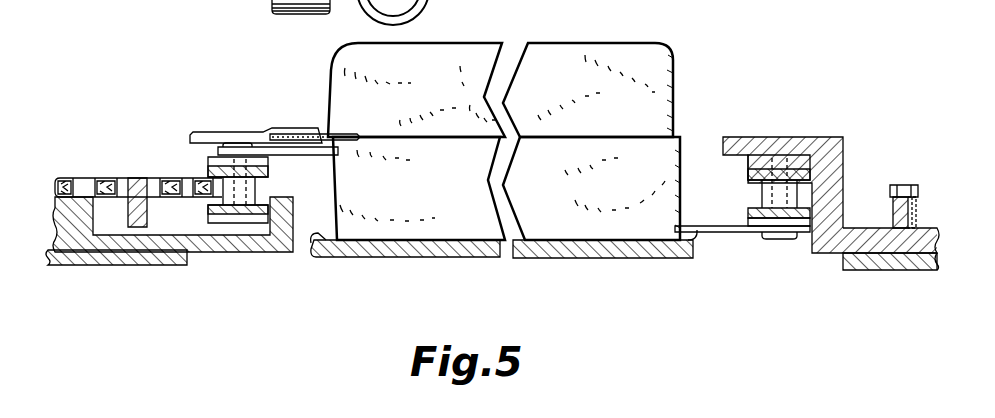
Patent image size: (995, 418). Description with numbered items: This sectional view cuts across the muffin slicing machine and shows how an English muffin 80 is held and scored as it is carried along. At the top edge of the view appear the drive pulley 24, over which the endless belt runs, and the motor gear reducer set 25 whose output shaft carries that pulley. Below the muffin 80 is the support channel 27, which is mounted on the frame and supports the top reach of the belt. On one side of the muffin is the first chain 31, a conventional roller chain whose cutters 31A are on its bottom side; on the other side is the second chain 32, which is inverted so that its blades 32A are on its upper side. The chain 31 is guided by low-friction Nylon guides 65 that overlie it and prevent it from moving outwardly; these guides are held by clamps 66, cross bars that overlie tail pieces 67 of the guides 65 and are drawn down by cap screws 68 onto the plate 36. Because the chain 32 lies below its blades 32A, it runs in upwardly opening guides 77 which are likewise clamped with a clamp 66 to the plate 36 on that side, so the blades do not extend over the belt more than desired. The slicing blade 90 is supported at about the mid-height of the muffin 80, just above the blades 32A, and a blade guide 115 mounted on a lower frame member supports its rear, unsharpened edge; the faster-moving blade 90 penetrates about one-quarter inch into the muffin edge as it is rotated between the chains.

The drive pulley 24 is at (276, 7).
The motor gear reducer set 25 is at (418, 3).
The support channel 27 is at (695, 258).
The first chain 31 is at (783, 216).
The cutters 31A is at (697, 226).
The second chain 32 is at (208, 170).
The blades 32A is at (318, 158).
The plate 36 is at (112, 265).
The guides 65 is at (788, 137).
The clamps 66 is at (147, 210).
The tail pieces 67 is at (865, 233).
The cap screws 68 is at (898, 185).
The guides 77 is at (217, 243).
The English muffin 80 is at (562, 50).
The slicing blade 90 is at (320, 130).
The blade guide 115 is at (229, 131).